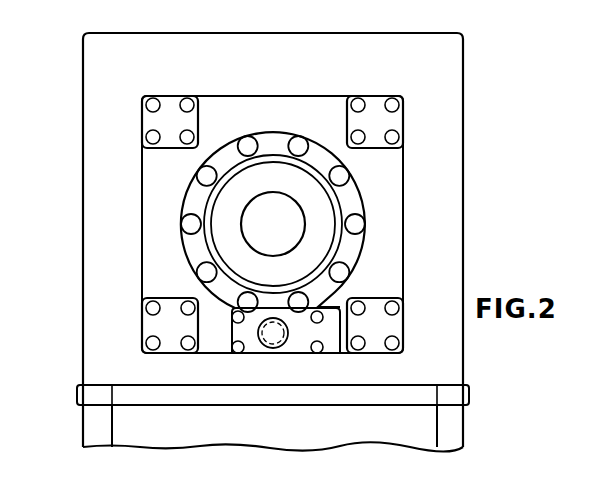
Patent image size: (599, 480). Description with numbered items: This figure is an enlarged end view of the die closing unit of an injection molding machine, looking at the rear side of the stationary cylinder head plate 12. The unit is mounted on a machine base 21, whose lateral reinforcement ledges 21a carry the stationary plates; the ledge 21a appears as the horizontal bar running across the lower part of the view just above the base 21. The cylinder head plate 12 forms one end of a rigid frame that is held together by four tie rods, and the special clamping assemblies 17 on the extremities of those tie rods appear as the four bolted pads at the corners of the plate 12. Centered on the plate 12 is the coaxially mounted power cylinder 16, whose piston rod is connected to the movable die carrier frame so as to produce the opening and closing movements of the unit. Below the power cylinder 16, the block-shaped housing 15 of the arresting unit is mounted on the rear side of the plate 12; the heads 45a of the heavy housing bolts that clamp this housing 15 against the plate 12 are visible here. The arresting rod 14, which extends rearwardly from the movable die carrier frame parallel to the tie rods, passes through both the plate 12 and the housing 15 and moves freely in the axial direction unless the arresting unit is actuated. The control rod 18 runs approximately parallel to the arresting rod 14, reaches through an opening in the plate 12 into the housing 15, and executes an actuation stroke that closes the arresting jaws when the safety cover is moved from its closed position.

The stationary cylinder head plate 12 is at (388, 210).
The arresting rod 14 is at (272, 340).
The housing 15 is at (296, 348).
The power cylinder 16 is at (292, 170).
The clamping assemblies 17 is at (168, 108).
The control rod 18 is at (323, 338).
The machine base 21 is at (420, 423).
The reinforcement ledge 21a is at (92, 395).
The heads of the housing bolts 45a is at (236, 353).